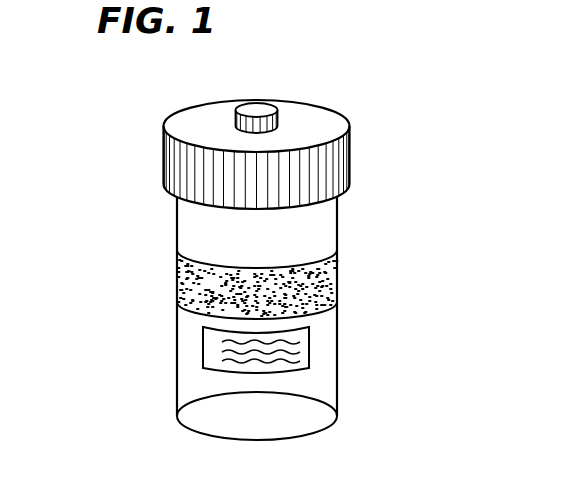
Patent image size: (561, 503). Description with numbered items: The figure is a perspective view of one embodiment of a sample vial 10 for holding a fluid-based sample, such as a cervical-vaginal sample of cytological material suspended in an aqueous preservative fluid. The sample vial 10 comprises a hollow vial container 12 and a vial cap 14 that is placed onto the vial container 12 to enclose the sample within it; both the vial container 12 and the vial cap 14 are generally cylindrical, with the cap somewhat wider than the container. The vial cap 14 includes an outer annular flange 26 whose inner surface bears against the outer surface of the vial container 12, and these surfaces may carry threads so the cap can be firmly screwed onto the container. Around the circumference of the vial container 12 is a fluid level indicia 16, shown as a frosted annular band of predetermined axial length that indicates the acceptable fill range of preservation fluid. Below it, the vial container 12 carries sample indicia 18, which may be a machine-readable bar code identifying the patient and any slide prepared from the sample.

The sample vial 10 is at (418, 201).
The vial container 12 is at (337, 370).
The vial cap 14 is at (326, 113).
The fluid level indicia 16 is at (337, 277).
The sample indicia 18 is at (303, 343).
The outer annular flange 26 is at (258, 98).